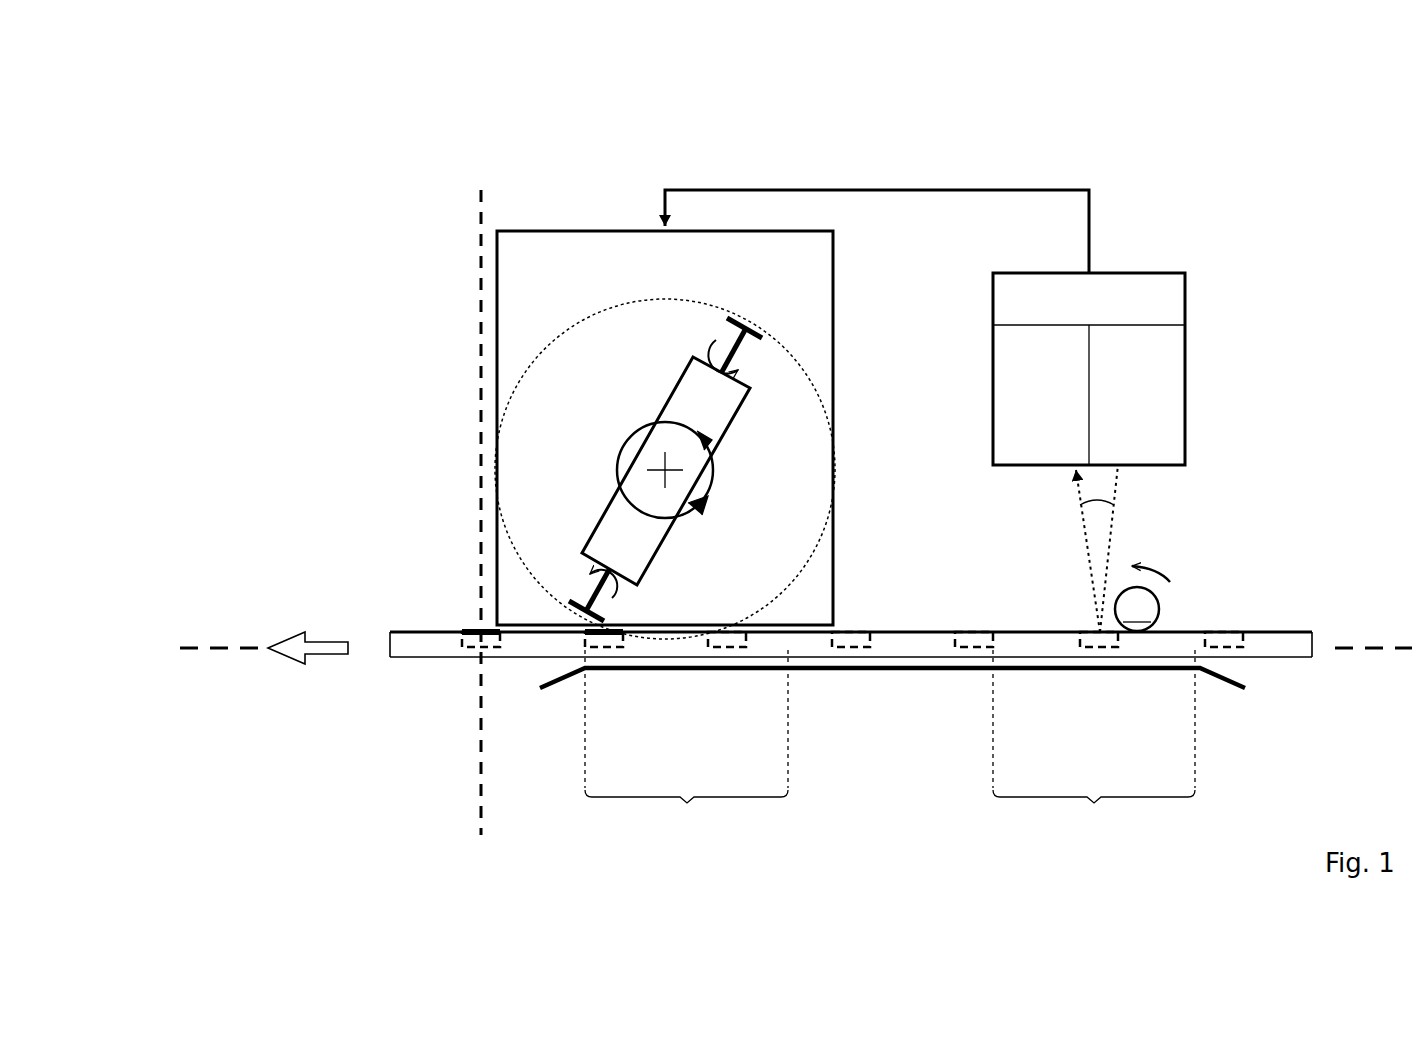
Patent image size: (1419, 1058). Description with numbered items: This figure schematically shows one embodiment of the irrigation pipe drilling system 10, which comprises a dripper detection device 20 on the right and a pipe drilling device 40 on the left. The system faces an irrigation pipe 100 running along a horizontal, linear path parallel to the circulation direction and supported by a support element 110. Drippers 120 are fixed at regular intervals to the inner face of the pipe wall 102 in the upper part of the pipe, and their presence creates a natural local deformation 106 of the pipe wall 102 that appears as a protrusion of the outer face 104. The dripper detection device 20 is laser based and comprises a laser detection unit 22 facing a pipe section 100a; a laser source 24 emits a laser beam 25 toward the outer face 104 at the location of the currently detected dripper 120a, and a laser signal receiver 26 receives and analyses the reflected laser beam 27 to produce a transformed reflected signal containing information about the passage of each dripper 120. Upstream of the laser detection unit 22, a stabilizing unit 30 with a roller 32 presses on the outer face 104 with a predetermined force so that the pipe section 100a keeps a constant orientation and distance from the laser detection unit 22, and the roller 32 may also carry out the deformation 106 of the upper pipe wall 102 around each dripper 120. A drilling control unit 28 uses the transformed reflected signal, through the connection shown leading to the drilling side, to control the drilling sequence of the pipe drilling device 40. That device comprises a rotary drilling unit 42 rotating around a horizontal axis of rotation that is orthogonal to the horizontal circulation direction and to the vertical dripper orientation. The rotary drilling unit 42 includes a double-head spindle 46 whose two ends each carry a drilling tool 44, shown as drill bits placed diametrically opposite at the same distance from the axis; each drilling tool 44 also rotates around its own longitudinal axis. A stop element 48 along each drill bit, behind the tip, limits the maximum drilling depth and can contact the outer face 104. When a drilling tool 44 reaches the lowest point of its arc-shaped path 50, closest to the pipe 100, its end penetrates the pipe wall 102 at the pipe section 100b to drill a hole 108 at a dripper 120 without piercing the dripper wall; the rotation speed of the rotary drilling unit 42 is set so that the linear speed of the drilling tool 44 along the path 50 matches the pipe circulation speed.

The irrigation pipe drilling system 10 is at (392, 175).
The dripper detection device 20 is at (1158, 208).
The laser detection unit 22 is at (1142, 359).
The laser source 24 is at (1136, 403).
The laser beam 25 is at (1112, 523).
The laser signal receiver 26 is at (1044, 403).
The reflected laser beam 27 is at (1082, 523).
The drilling control unit 28 is at (1088, 303).
The stabilizing unit 30 is at (1202, 545).
The roller 32 is at (1142, 598).
The pipe drilling device 40 is at (530, 160).
The rotary drilling unit 42 is at (656, 469).
The drilling tool 44 is at (750, 318).
The double-head spindle 46 is at (735, 428).
The stop element 48 is at (760, 338).
The arc-shaped path 50 is at (585, 318).
The irrigation pipe 100 is at (876, 631).
The pipe section facing the laser detection unit 100a is at (1094, 744).
The pipe section facing the rotary drilling unit 100b is at (686, 744).
The pipe wall 102 is at (1297, 660).
The outer face 104 is at (1272, 628).
The local deformation 106 is at (1226, 632).
The hole 108 is at (480, 638).
The support element 110 is at (918, 672).
The dripper 120 is at (850, 640).
The currently detected dripper 120a is at (1100, 640).